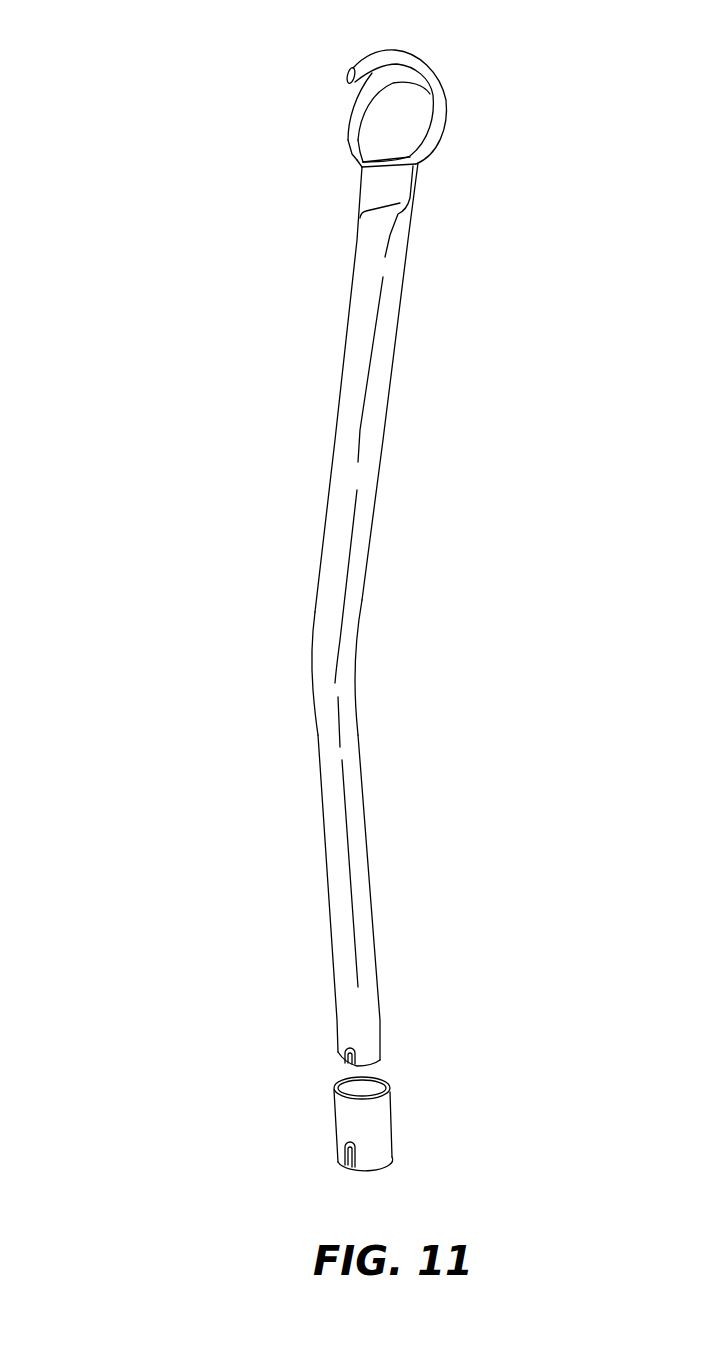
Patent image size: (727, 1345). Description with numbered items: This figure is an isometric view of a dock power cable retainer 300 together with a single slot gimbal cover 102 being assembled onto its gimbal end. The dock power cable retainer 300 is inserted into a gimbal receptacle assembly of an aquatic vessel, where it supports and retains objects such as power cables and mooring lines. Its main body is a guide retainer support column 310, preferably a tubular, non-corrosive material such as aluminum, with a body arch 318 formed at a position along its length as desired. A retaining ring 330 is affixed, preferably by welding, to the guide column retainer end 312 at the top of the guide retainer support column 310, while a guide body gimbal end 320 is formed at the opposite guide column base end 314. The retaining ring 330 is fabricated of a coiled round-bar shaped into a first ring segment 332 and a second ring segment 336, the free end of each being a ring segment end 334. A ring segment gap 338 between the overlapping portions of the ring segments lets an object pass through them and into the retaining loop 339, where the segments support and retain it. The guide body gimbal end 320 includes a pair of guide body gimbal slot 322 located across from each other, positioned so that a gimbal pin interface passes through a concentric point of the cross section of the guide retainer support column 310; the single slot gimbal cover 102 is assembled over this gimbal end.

The dock power cable retainer 300 is at (183, 313).
The guide retainer support column 310 is at (363, 605).
The guide column retainer end 312 is at (422, 161).
The guide column base end 314 is at (375, 1062).
The body arch 318 is at (297, 613).
The guide body gimbal end 320 is at (308, 1038).
The guide body gimbal slot 322 is at (348, 1067).
The retaining ring 330 is at (462, 62).
The first ring segment 332 is at (450, 116).
The ring segment end 334 is at (347, 78).
The second ring segment 336 is at (376, 130).
The ring segment gap 338 is at (349, 98).
The retaining loop 339 is at (362, 162).
The single slot gimbal cover 102 is at (414, 1128).